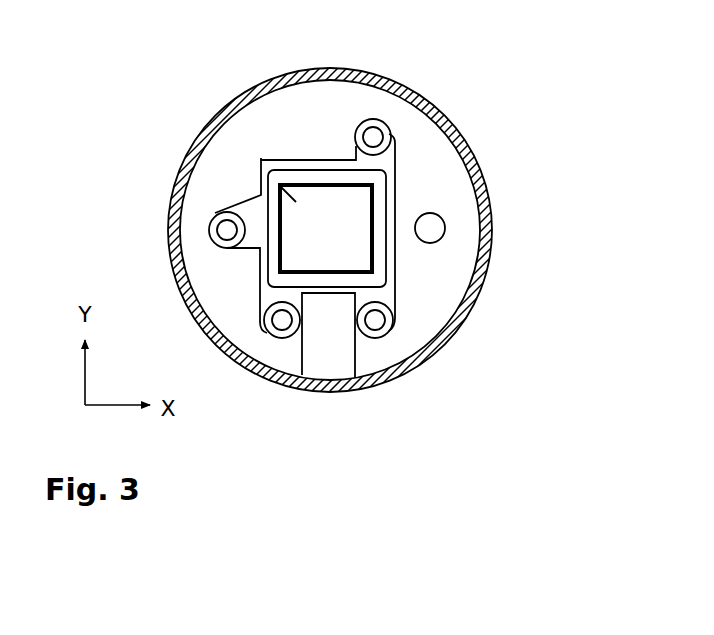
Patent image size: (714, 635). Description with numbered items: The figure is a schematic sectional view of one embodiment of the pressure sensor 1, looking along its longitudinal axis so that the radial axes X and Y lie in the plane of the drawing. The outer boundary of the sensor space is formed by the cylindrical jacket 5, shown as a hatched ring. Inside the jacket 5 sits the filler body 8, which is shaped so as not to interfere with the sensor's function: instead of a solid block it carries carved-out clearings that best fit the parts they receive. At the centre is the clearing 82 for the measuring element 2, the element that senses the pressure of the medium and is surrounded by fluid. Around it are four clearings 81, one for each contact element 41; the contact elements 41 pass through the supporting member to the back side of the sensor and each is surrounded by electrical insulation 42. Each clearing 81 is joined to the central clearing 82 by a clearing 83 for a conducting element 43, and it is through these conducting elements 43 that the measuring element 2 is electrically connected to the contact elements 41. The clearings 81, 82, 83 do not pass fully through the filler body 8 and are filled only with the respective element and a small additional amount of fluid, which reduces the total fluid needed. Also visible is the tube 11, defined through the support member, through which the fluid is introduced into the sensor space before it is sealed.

The pressure sensor 1 is at (100, 116).
The measuring element 2 is at (261, 158).
The jacket 5 is at (177, 182).
The filler body 8 is at (492, 212).
The tube 11 is at (430, 228).
The contact element 41 is at (288, 219).
The electrical insulation 42 is at (375, 135).
The conducting element 43 is at (260, 220).
The clearing for contact element 81 is at (215, 206).
The clearing for sensor element 82 is at (332, 290).
The clearing for conducting element 83 is at (237, 190).